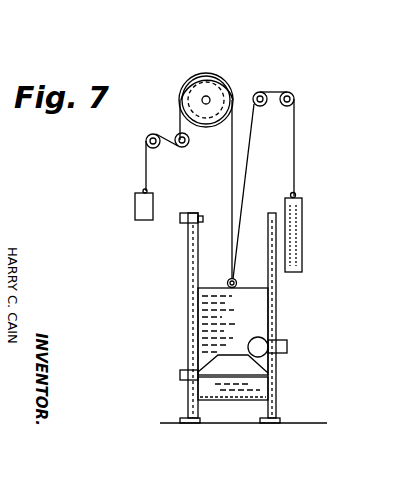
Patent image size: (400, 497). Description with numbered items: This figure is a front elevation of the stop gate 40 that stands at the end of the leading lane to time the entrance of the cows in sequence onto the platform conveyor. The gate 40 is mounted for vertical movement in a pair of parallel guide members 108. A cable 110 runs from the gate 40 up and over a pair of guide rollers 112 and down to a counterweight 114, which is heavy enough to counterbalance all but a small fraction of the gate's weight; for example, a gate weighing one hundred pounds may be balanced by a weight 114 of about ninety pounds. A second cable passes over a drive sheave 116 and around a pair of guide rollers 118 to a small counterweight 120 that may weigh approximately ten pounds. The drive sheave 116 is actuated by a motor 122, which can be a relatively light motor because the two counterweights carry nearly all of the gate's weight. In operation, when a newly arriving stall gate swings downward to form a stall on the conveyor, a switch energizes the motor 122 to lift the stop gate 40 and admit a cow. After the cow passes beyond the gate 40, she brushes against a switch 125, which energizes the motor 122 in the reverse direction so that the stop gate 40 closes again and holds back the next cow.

The stop gate 40 is at (233, 340).
The guide members 108 is at (188, 313).
The cable 110 is at (230, 190).
The guide rollers 112 is at (265, 92).
The counterweight 114 is at (303, 232).
The drive sheave 116 is at (209, 73).
The guide rollers 118 is at (151, 134).
The small counterweight 120 is at (152, 218).
The motor 122 is at (228, 90).
The switch 125 is at (257, 339).